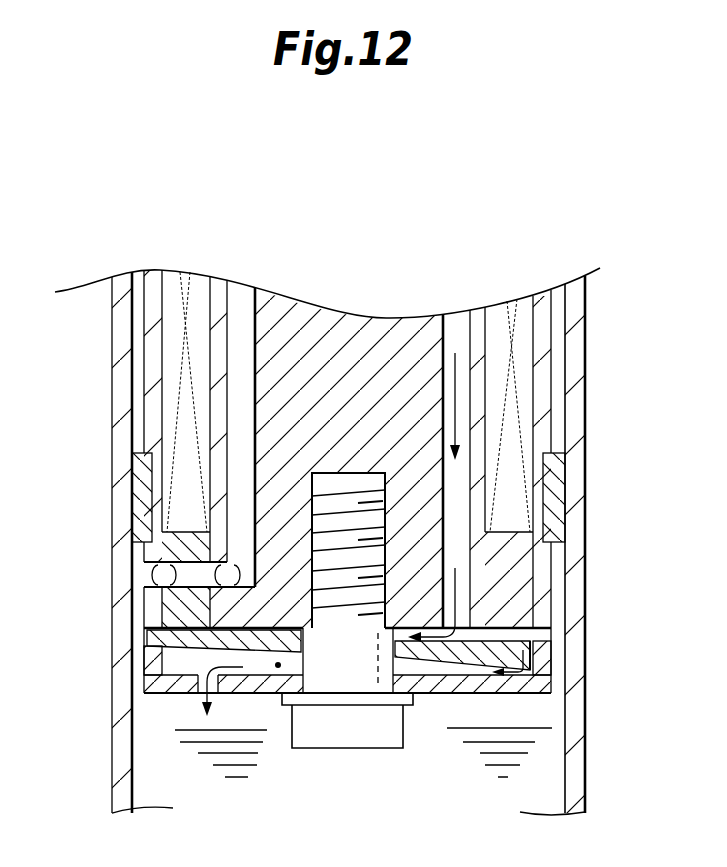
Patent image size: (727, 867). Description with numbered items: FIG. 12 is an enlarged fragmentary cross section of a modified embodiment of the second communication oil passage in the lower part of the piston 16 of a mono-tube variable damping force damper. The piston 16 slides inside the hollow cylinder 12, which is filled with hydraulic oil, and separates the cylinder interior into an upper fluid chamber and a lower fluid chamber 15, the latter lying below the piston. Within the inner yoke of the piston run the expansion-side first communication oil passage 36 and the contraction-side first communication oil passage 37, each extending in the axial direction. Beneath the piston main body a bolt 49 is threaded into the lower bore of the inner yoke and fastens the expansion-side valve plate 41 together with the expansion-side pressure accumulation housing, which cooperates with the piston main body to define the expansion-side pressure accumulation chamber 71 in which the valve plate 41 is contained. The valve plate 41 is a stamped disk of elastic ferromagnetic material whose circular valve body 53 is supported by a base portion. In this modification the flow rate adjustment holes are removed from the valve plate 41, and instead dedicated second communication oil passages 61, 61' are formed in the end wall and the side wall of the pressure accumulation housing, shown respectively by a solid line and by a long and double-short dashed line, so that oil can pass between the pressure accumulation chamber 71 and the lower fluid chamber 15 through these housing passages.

The cylinder 12 is at (117, 343).
The piston 16 is at (143, 398).
The contraction-side first communication oil passage 37 is at (227, 478).
The expansion-side first communication oil passage 36 is at (472, 371).
The expansion-side valve plate 41 is at (147, 638).
The second communication oil passage 61' is at (290, 677).
The expansion-side pressure accumulation chamber 71 is at (278, 668).
The second communication oil passage 61 is at (198, 720).
The bolt 49 is at (365, 748).
The lower fluid chamber 15 is at (460, 779).
The valve body 53 is at (530, 657).